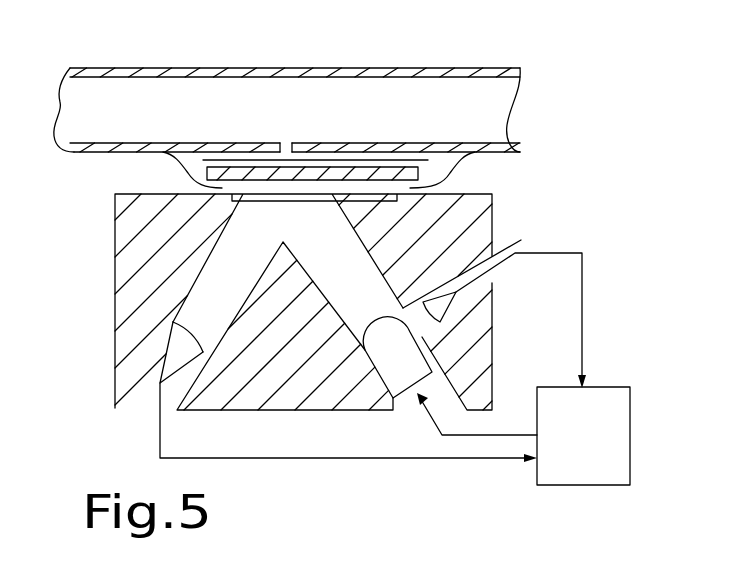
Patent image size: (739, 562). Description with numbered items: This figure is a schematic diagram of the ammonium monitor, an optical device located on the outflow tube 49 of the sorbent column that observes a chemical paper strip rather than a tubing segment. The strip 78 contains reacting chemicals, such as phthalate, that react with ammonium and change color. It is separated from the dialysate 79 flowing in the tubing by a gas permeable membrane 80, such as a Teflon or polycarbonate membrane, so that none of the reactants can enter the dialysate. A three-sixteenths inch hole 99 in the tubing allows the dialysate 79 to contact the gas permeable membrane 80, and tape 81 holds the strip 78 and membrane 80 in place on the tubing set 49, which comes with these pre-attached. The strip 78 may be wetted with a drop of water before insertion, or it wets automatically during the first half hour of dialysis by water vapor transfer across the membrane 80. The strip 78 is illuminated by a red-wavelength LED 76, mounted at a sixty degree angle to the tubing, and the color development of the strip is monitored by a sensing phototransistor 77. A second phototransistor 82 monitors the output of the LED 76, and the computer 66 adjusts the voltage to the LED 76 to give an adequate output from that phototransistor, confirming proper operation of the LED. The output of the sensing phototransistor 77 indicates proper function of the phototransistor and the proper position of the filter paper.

The outflow tube 49 is at (538, 72).
The dialysate 79 is at (373, 121).
The hole 99 is at (290, 134).
The gas permeable membrane 80 is at (204, 160).
The strip 78 is at (418, 174).
The tape 81 is at (505, 162).
The phototransistor 82 is at (494, 304).
The computer 66 is at (608, 388).
The red-wavelength LED 76 is at (401, 388).
The phototransistor 77 is at (332, 392).